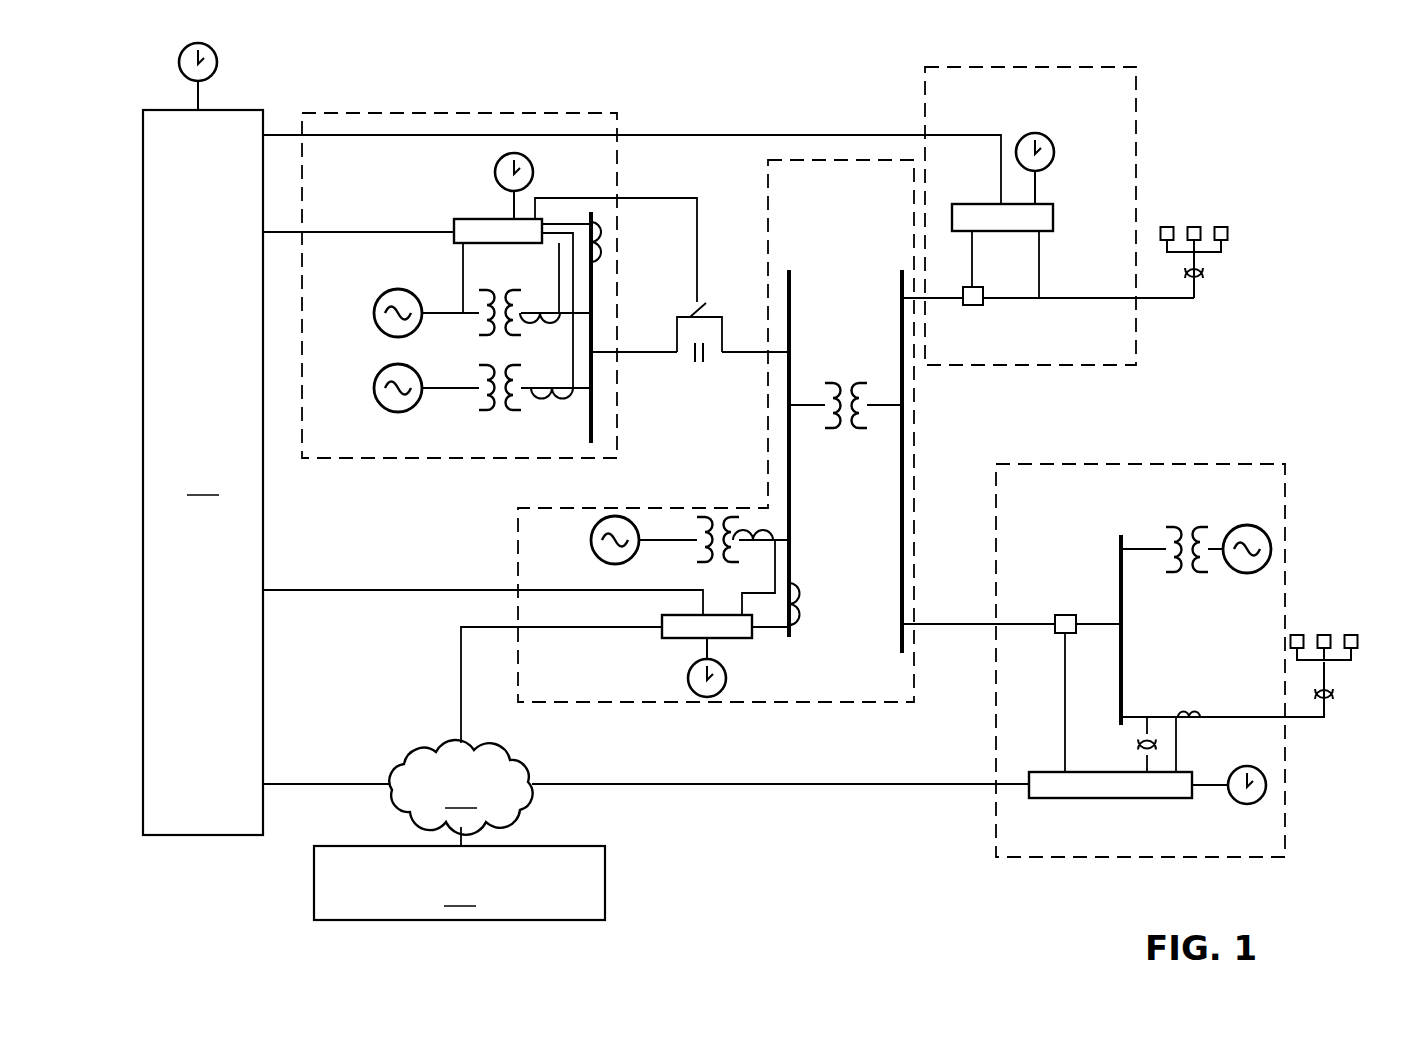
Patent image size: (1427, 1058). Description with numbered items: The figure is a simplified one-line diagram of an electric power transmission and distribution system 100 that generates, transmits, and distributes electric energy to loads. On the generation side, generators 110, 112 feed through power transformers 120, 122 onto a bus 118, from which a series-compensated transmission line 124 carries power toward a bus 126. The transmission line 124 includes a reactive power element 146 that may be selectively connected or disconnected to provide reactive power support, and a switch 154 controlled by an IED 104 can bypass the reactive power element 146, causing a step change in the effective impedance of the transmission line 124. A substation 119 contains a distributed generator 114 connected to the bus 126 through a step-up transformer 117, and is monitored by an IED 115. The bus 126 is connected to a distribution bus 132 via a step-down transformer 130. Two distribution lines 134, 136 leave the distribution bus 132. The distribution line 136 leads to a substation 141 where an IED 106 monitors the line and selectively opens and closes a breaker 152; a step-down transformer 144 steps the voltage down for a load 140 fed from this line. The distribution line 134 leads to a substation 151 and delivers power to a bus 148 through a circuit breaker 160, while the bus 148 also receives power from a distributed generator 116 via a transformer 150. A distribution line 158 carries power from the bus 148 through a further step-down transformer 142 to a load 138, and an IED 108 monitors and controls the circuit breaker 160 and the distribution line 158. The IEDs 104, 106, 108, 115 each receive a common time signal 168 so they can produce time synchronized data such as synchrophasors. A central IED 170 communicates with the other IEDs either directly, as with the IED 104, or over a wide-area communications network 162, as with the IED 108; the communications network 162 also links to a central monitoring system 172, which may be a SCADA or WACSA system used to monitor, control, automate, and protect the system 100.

The electric power transmission and distribution system 100 is at (1263, 137).
The IED 104 is at (475, 217).
The IED 106 is at (968, 202).
The IED 108 is at (1160, 800).
The generator 110 is at (374, 313).
The generator 112 is at (374, 388).
The generator 114 is at (591, 540).
The IED 115 is at (672, 640).
The distributed generator 116 is at (1238, 570).
The step-up transformer 117 is at (700, 555).
The bus 118 is at (588, 400).
The substation 119 is at (518, 540).
The power transformer 120 is at (480, 330).
The power transformer 122 is at (500, 412).
The transmission line 124 is at (645, 354).
The bus 126 is at (792, 432).
The step-down transformer 130 is at (846, 382).
The distribution bus 132 is at (900, 608).
The distribution line 134 is at (1003, 626).
The distribution line 136 is at (942, 300).
The load 138 is at (1327, 632).
The load 140 is at (1232, 233).
The substation 141 is at (1108, 366).
The step-down transformer 142 is at (1338, 695).
The step-down transformer 144 is at (1208, 274).
The reactive power element 146 is at (703, 358).
The bus 148 is at (1118, 535).
The transformer 150 is at (1177, 525).
The substation 151 is at (1220, 858).
The breaker 152 is at (986, 306).
The switch 154 is at (692, 306).
The distribution line 158 is at (1213, 714).
The circuit breaker 160 is at (1062, 612).
The communications network 162 is at (460, 787).
The common time signal 168 is at (217, 62).
The central IED 170 is at (203, 472).
The central monitoring system 172 is at (459, 883).